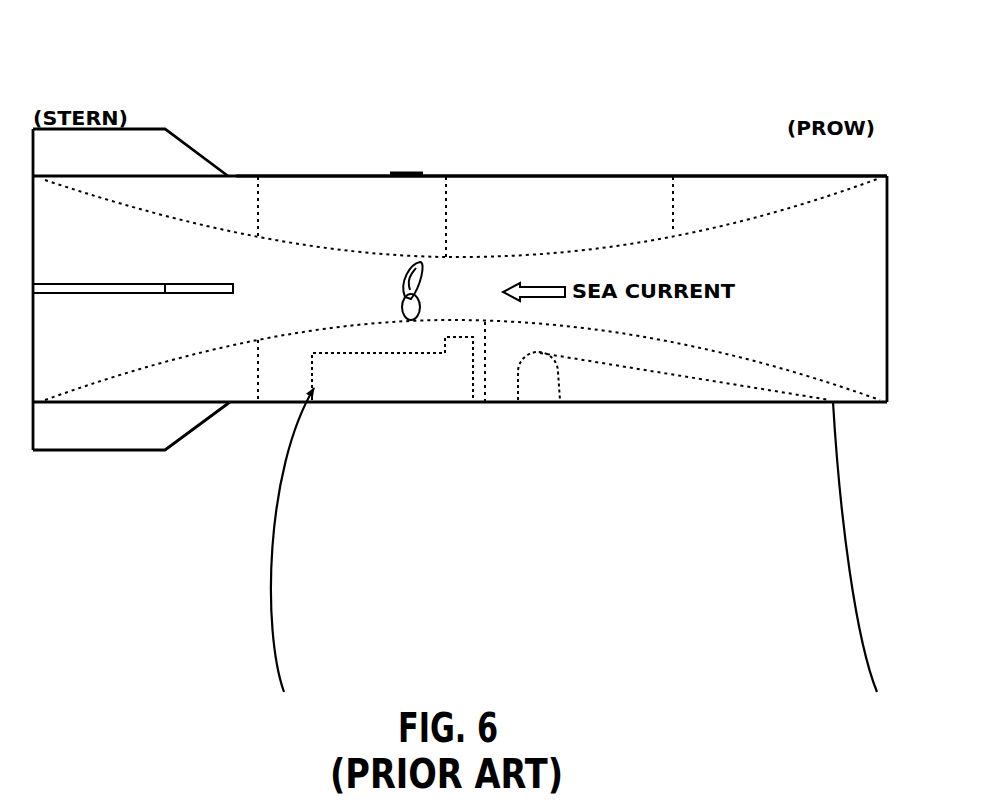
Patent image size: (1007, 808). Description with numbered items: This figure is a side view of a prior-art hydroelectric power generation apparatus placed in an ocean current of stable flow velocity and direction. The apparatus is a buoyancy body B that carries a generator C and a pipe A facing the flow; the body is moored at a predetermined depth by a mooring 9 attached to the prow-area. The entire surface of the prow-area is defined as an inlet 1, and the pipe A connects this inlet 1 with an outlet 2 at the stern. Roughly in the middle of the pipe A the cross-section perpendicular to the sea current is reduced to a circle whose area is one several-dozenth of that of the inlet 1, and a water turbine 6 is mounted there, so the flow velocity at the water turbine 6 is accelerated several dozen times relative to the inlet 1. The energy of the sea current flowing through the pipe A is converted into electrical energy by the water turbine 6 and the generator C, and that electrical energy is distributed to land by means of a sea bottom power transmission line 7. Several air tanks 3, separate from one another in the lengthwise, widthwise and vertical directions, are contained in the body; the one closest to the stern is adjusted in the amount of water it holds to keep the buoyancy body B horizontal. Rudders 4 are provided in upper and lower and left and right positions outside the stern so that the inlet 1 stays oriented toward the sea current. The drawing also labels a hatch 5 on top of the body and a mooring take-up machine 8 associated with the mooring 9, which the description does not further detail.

The inlet 1 is at (832, 289).
The outlet 2 is at (104, 289).
The air tanks 3 is at (462, 289).
The rudders 4 is at (108, 247).
The hatch 5 is at (412, 170).
The water turbine 6 is at (398, 292).
The sea bottom power transmission line 7 is at (268, 583).
The mooring take-up machine 8 is at (541, 380).
The mooring 9 is at (848, 580).
The pipe A is at (460, 289).
The buoyancy body B is at (578, 150).
The generator C is at (352, 388).